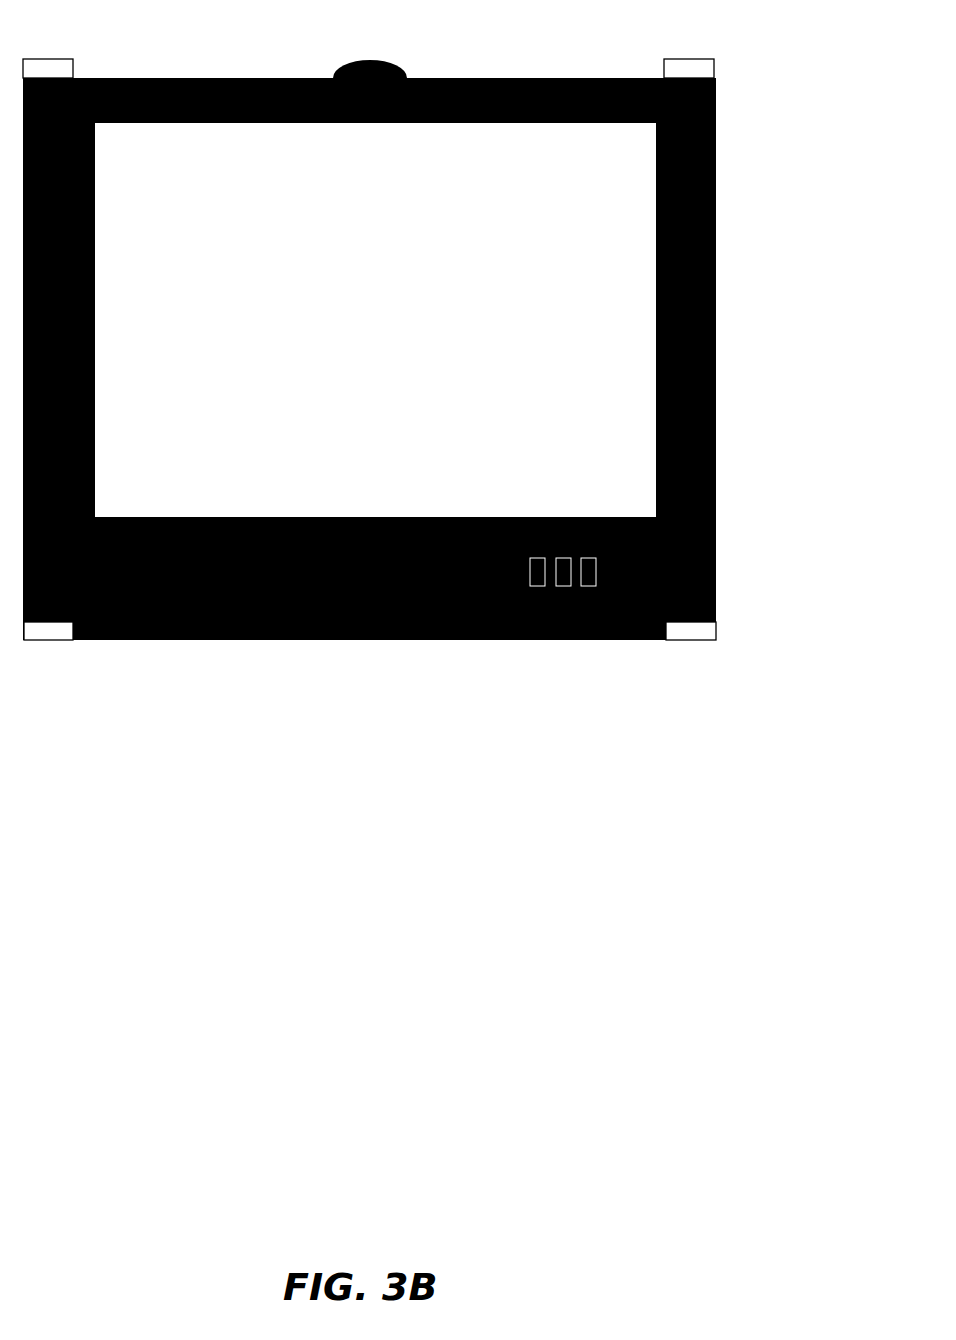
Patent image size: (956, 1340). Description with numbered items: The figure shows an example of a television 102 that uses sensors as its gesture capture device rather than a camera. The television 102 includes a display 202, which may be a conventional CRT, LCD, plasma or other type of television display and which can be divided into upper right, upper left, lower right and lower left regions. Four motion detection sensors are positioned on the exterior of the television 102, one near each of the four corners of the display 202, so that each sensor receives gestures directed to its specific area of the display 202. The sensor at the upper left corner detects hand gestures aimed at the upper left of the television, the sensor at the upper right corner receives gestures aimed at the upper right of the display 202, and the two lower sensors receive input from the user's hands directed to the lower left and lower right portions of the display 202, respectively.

The television 102 is at (430, 350).
The display 202 is at (375, 320).